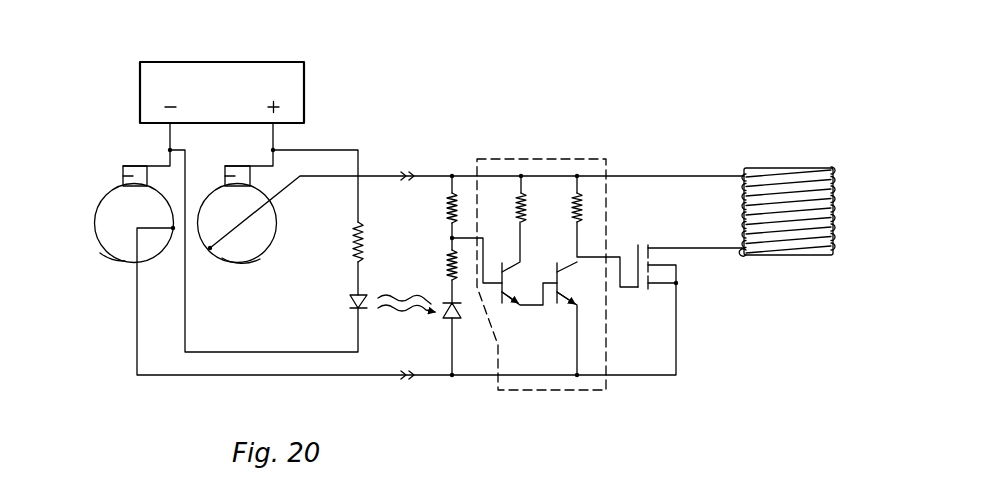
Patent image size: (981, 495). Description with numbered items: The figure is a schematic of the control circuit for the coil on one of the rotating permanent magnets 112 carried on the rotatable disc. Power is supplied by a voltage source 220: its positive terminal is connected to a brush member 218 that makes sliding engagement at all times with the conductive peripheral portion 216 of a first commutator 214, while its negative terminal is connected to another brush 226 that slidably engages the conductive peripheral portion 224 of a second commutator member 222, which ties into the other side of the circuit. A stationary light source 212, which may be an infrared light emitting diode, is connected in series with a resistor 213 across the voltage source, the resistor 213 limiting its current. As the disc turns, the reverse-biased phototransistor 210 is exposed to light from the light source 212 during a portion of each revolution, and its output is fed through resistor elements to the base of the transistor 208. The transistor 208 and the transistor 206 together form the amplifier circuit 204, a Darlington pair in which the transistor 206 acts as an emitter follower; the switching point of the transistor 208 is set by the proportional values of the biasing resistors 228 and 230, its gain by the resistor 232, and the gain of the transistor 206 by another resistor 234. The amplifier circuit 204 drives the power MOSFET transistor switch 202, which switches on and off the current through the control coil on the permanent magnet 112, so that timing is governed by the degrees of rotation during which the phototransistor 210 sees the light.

The rotating permanent magnet 112 is at (773, 168).
The power MOSFET transistor switch 202 is at (643, 296).
The amplifier circuit 204 is at (534, 158).
The transistor 206 is at (567, 320).
The transistor 208 is at (516, 320).
The phototransistor 210 is at (440, 326).
The light source 212 is at (366, 294).
The resistor 213 is at (355, 244).
The first commutator 214 is at (244, 270).
The conductive peripheral portion 216 is at (278, 217).
The brush member 218 is at (225, 177).
The voltage source 220 is at (305, 91).
The commutator member 222 is at (112, 266).
The conductive peripheral portion 224 is at (95, 222).
The brush 226 is at (123, 177).
The biasing resistor 228 is at (447, 207).
The biasing resistor 230 is at (450, 258).
The resistor 232 is at (525, 200).
The resistor 234 is at (582, 216).